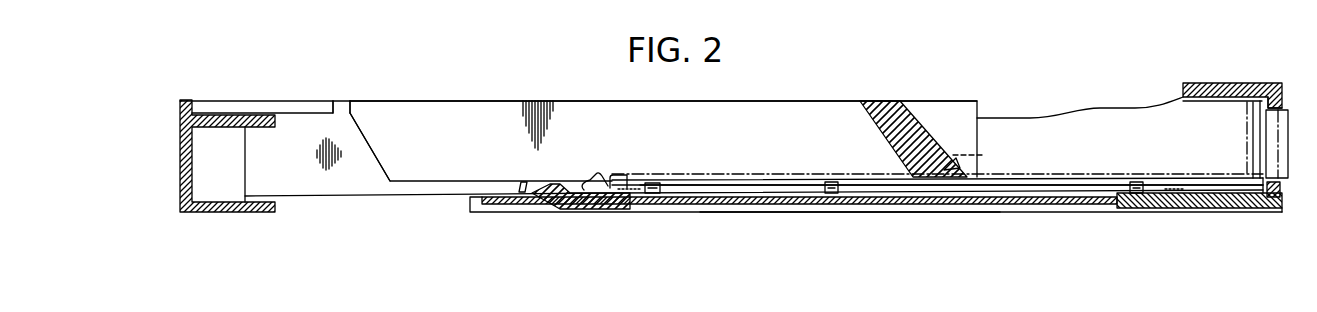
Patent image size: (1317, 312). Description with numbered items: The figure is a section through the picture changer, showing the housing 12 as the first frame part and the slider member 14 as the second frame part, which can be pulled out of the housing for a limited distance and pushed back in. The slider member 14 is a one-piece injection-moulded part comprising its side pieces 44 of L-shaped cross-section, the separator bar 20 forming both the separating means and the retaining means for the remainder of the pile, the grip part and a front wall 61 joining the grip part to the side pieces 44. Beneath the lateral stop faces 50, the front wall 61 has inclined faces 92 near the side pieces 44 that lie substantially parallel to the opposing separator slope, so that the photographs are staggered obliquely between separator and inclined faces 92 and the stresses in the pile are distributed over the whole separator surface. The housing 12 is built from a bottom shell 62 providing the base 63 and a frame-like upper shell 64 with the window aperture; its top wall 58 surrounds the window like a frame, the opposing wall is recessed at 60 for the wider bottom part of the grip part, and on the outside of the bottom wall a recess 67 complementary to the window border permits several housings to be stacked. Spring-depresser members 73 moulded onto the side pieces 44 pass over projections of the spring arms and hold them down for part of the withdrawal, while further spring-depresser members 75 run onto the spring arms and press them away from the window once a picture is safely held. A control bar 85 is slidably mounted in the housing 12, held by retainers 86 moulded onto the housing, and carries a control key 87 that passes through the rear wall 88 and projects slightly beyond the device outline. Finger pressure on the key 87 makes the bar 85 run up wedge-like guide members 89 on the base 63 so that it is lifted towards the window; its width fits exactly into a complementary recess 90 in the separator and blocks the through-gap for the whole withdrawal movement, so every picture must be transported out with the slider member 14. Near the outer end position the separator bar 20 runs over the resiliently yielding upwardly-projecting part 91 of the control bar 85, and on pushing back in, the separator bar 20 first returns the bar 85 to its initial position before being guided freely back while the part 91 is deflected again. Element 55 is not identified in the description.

The housing 12 is at (1224, 83).
The slider member 14 is at (330, 199).
The separator bar 20 is at (870, 100).
The side pieces 44 is at (406, 110).
The lateral stop faces 50 is at (350, 105).
The shaded surface 55 is at (504, 99).
The top wall 58 is at (1253, 83).
The recess 60 is at (513, 212).
The front wall 61 is at (178, 181).
The bottom shell 62 is at (1217, 205).
The base 63 is at (843, 212).
The upper shell 64 is at (1180, 92).
The recess 67 is at (720, 204).
The spring-depresser members 73 is at (897, 181).
The spring-depresser members 75 is at (525, 181).
The control bar 85 is at (760, 184).
The retainers 86 is at (657, 183).
The control key 87 is at (1285, 167).
The rear wall 88 is at (1283, 103).
The wedge-like guide members 89 is at (631, 168).
The recess 90 is at (985, 155).
The upwardly-projecting part 91 is at (588, 177).
The inclined faces 92 is at (377, 157).